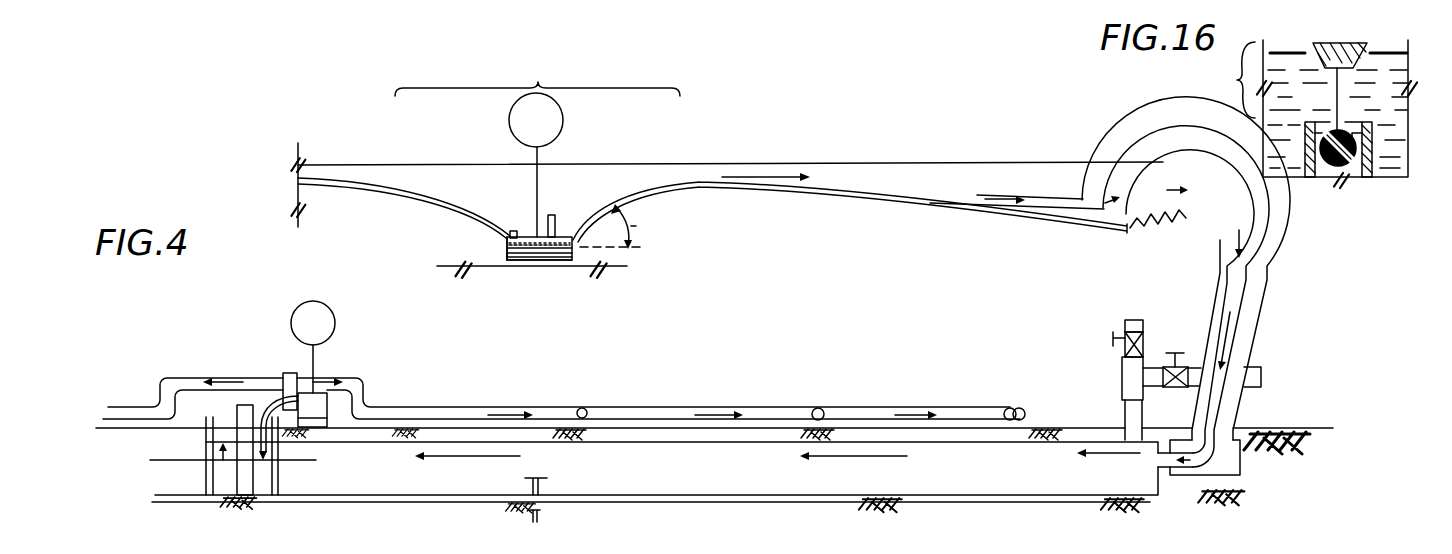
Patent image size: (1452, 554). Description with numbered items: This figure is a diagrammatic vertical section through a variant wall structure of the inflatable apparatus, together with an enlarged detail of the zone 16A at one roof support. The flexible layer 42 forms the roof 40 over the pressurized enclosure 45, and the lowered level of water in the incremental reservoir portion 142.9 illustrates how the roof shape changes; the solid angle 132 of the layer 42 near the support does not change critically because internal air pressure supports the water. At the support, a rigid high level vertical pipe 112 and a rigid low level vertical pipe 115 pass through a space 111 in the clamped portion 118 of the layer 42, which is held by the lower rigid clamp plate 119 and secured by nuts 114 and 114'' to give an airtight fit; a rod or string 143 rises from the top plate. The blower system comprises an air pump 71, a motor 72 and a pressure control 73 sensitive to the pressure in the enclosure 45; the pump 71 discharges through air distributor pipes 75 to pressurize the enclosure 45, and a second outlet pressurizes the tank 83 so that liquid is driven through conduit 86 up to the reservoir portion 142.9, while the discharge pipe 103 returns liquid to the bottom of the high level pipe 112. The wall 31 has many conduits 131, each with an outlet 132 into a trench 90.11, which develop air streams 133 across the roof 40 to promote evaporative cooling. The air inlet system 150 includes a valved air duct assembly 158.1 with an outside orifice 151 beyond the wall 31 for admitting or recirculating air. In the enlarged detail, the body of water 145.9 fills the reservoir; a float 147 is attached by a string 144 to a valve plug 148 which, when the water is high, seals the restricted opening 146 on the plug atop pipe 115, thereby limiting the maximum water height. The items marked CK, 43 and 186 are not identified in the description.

In FIG. 4, the incremental reservoir portion 142.9 is at (537, 77).
In FIG. 4, the float 147 is at (513, 237).
In FIG. 16, the float 147 is at (1320, 42).
In FIG. 4, the rod or string 143 is at (543, 152).
In FIG. 4, the low level vertical pipe 115 is at (528, 235).
In FIG. 16, the low level vertical pipe 115 is at (1360, 153).
In FIG. 4, the high level vertical pipe 112 is at (553, 214).
In FIG. 4, the outlet of conduit / solid angle 132 is at (1153, 455).
In FIG. 4, the zone 16A is at (503, 246).
In FIG. 4, the portion of the layer 118 is at (505, 260).
In FIG. 4, the space or orifice 111 is at (535, 257).
In FIG. 4, the nuts 114'' is at (560, 287).
In FIG. 4, the lower rigid clamp plate 119 is at (560, 258).
In FIG. 4, the air streams 133 is at (784, 179).
In FIG. 4, the layer 42 is at (777, 187).
In FIG. 4, the roof 40 is at (1038, 222).
In FIG. 4, the screen 43 is at (1152, 232).
In FIG. 4, the conduits 131 is at (1242, 277).
In FIG. 4, the wall 31 is at (1252, 300).
In FIG. 4, the enclosure 45 is at (894, 277).
In FIG. 4, the valved air duct assembly 158.1 is at (1190, 340).
In FIG. 4, the air inlet system 150 is at (1108, 338).
In FIG. 4, the outside orifice 151 is at (1263, 370).
In FIG. 4, the pressure control 73 is at (297, 313).
In FIG. 4, the air pump 71 is at (288, 373).
In FIG. 4, the motor 72 is at (317, 397).
In FIG. 4, the air distributor pipes 75 is at (453, 413).
In FIG. 4, the check valve CK is at (582, 408).
In FIG. 4, the nuts 114 is at (1023, 399).
In FIG. 4, the tank 83 is at (247, 480).
In FIG. 4, the foundation 186 is at (193, 500).
In FIG. 4, the discharge pipe 103 is at (548, 478).
In FIG. 4, the conduit 86 is at (577, 500).
In FIG. 4, the trench 90.11 is at (760, 478).
In FIG. 16, the body of water 145.9 is at (1222, 80).
In FIG. 16, the string 144 is at (1338, 100).
In FIG. 16, the restricted opening 146 is at (1327, 115).
In FIG. 16, the valve plug 148 is at (1345, 145).